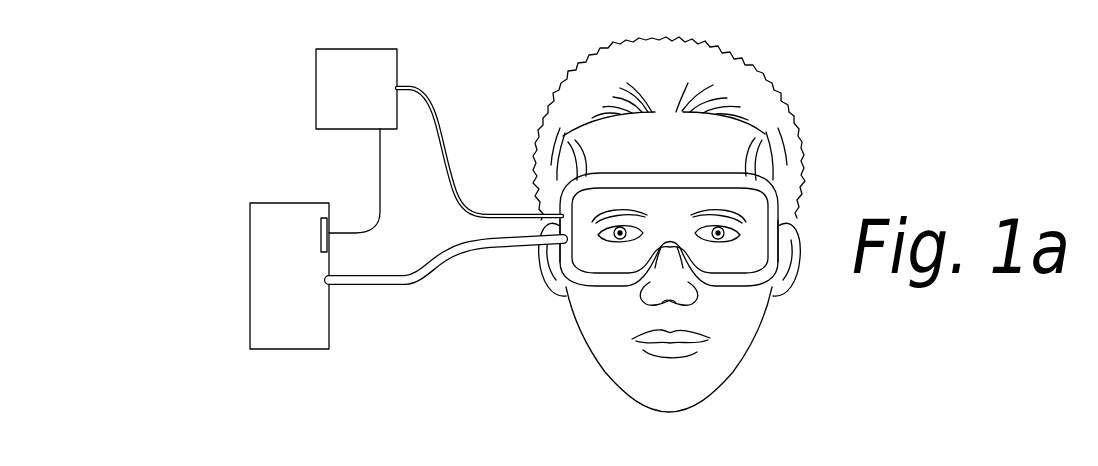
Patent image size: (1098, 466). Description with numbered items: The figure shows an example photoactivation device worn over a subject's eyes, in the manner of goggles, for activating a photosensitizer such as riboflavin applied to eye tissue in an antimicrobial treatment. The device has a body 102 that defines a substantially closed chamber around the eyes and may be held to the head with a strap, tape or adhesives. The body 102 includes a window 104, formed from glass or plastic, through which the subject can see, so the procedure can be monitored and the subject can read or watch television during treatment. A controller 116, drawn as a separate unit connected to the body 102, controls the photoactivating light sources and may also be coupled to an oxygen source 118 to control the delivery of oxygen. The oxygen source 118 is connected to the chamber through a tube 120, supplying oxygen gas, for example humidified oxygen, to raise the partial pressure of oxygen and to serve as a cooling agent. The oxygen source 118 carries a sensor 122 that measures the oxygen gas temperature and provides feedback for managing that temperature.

The body 102 is at (577, 265).
The window 104 is at (583, 213).
The controller 116 is at (316, 70).
The oxygen source 118 is at (250, 240).
The tube 120 is at (367, 285).
The sensor 122 is at (322, 222).